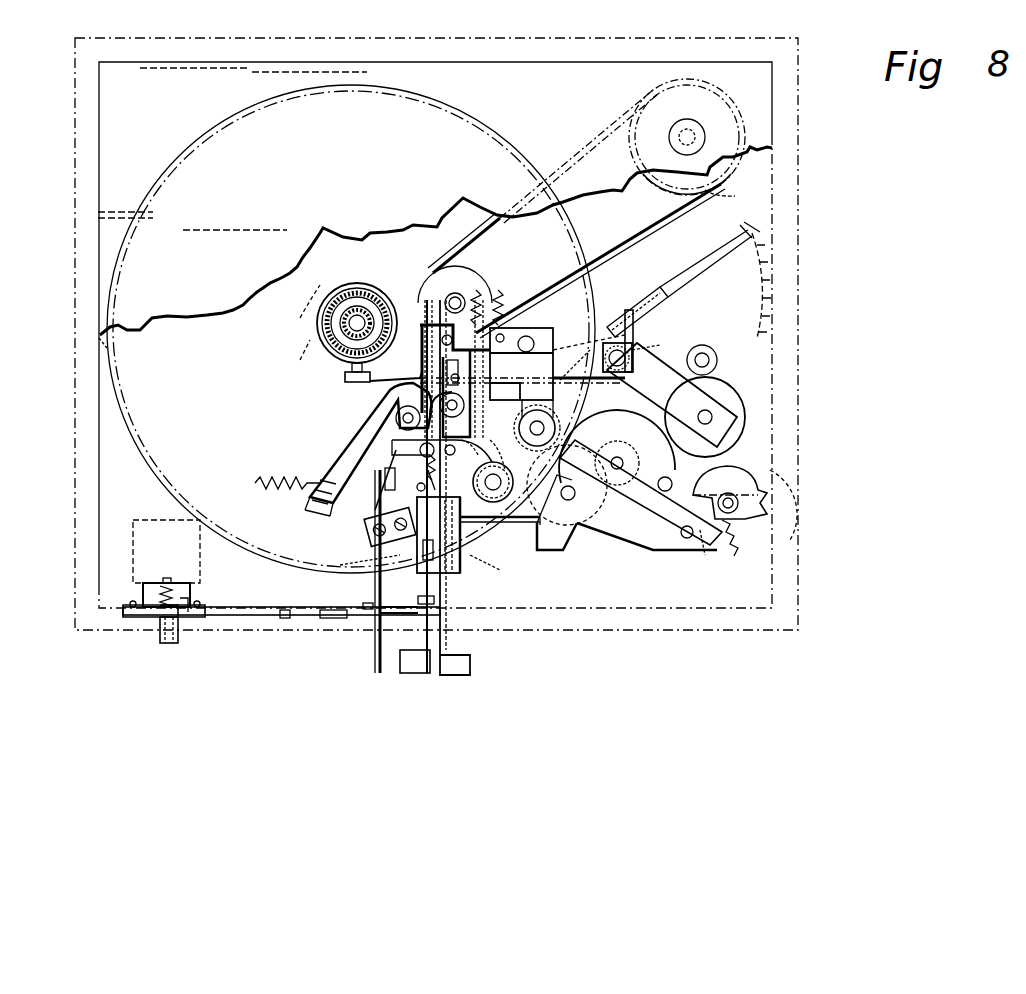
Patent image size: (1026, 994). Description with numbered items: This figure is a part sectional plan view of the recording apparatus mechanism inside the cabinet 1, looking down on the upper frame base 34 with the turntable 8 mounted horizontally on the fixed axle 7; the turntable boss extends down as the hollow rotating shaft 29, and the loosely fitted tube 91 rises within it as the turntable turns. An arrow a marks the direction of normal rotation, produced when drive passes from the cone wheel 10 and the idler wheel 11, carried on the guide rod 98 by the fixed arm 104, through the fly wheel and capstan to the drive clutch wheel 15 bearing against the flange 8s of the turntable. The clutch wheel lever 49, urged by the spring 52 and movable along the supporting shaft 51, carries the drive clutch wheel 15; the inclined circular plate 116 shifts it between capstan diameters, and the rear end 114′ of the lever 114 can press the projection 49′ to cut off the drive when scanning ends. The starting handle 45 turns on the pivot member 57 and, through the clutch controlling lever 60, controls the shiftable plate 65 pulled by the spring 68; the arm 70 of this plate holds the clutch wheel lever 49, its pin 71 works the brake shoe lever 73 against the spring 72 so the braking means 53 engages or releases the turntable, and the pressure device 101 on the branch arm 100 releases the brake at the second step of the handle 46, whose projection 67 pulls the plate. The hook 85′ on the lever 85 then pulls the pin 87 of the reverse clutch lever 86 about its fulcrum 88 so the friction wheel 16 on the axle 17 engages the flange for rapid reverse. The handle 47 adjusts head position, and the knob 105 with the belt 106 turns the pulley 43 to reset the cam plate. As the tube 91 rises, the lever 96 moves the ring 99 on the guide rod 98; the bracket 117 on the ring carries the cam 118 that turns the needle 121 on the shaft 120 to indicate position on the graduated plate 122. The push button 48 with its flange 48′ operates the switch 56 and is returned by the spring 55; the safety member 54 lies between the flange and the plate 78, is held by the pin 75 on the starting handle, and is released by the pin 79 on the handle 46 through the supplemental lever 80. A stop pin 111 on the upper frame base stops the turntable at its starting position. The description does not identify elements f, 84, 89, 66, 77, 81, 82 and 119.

The cabinet 1 is at (75, 145).
The upper frame base 34 is at (99, 192).
The turntable 8 is at (351, 329).
The record sheet edge f is at (150, 268).
The arrow a is at (135, 380).
The knob 105 is at (705, 137).
The belt 106 is at (716, 207).
The hook 85′ is at (440, 268).
The pivot member 57 is at (600, 261).
The fixed axle 7 is at (340, 290).
The hollow rotating shaft 29 is at (340, 316).
The loosely fitted tube 91 is at (285, 313).
The spring 55 is at (190, 592).
The pin 87 is at (378, 362).
The bracket arm 84 is at (385, 386).
The pulley 43 is at (430, 290).
The spring 68 is at (526, 336).
The fulcrum 88 is at (505, 335).
The reverse clutch lever 86 is at (589, 335).
The clutch controlling lever 60 is at (520, 364).
The lever 96 is at (562, 376).
The shiftable plate 65 is at (476, 578).
The shaft 120 is at (625, 318).
The lever extension 119 is at (665, 290).
The needle 121 is at (712, 258).
The graduated plate 122 is at (772, 258).
The cam 118 is at (636, 318).
The guide rod 98 is at (596, 372).
The bracket 117 is at (653, 339).
The ring 99 is at (687, 355).
The cone wheel 10 is at (714, 356).
The idler wheel 11 is at (738, 397).
The fixed arm 104 is at (722, 420).
The axle 17 is at (545, 422).
The friction wheel 16 is at (537, 438).
The brake shoe 53 is at (503, 454).
The pin 75 is at (484, 434).
The lever 85 is at (328, 460).
The spring 89 is at (287, 471).
The pressure device 101 is at (395, 418).
The branch arm 100 is at (400, 430).
The brake shoe lever 73 is at (432, 450).
The pin 71 is at (420, 478).
The spring 72 is at (390, 498).
The stop pin 111 is at (383, 542).
The link 66 is at (370, 564).
The projection 67 is at (418, 560).
The supplemental lever 80 is at (378, 640).
The handle 47 is at (375, 650).
The handle 46 is at (415, 652).
The pin 79 is at (440, 600).
The starting handle 45 is at (472, 660).
The flange 8s is at (486, 554).
The arm 70 is at (520, 520).
The drive clutch wheel 15 is at (606, 482).
The lever 114 is at (650, 538).
The clutch wheel lever 49 is at (640, 555).
The supporting shaft 51 is at (684, 545).
The rear end 114′ is at (712, 565).
The inclined circular plate 116 is at (760, 470).
The projection 49′ is at (740, 520).
The spring 52 is at (735, 558).
The safety member 54 is at (250, 616).
The switch 56 is at (195, 570).
The push button 48 is at (162, 640).
The flange 48′ is at (160, 612).
The plate 78 is at (186, 618).
The stop 77 is at (285, 620).
The stop block 82 is at (336, 620).
The lug 81 is at (362, 604).